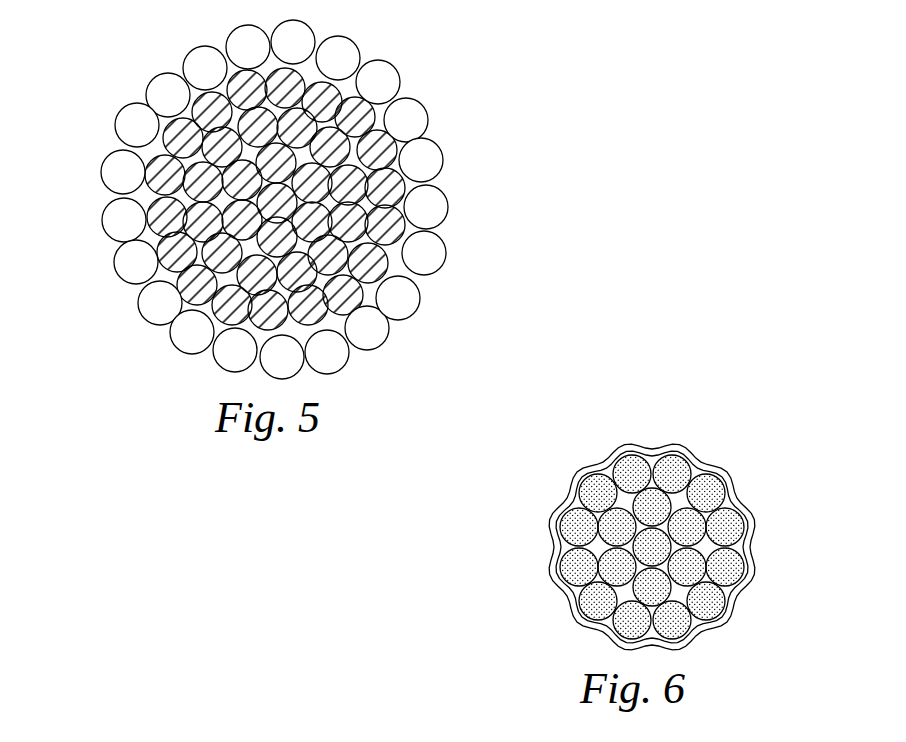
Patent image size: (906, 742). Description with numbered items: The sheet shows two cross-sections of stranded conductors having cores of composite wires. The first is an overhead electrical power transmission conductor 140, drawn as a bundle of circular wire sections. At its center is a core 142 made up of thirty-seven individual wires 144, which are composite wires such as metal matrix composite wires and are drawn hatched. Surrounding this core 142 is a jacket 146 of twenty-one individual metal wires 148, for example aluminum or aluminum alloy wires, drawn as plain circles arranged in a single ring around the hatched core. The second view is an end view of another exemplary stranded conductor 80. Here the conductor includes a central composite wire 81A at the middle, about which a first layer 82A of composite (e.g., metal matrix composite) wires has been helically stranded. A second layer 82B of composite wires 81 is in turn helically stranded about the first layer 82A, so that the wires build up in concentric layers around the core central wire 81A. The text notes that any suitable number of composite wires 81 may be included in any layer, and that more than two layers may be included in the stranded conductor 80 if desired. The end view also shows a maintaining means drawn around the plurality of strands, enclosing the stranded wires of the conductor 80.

In FIG. 5, the overhead electrical power transmission conductor 140 is at (437, 50).
In FIG. 5, the core 142 is at (140, 185).
In FIG. 5, the individual wires 144 is at (173, 258).
In FIG. 5, the jacket 146 is at (443, 268).
In FIG. 5, the metal wires 148 is at (432, 160).
In FIG. 6, the stranded conductor 80 is at (756, 425).
In FIG. 6, the composite wires 81 is at (700, 457).
In FIG. 6, the central wires 81A is at (645, 545).
In FIG. 6, the first layer 82A is at (693, 583).
In FIG. 6, the second layer 82B is at (745, 543).